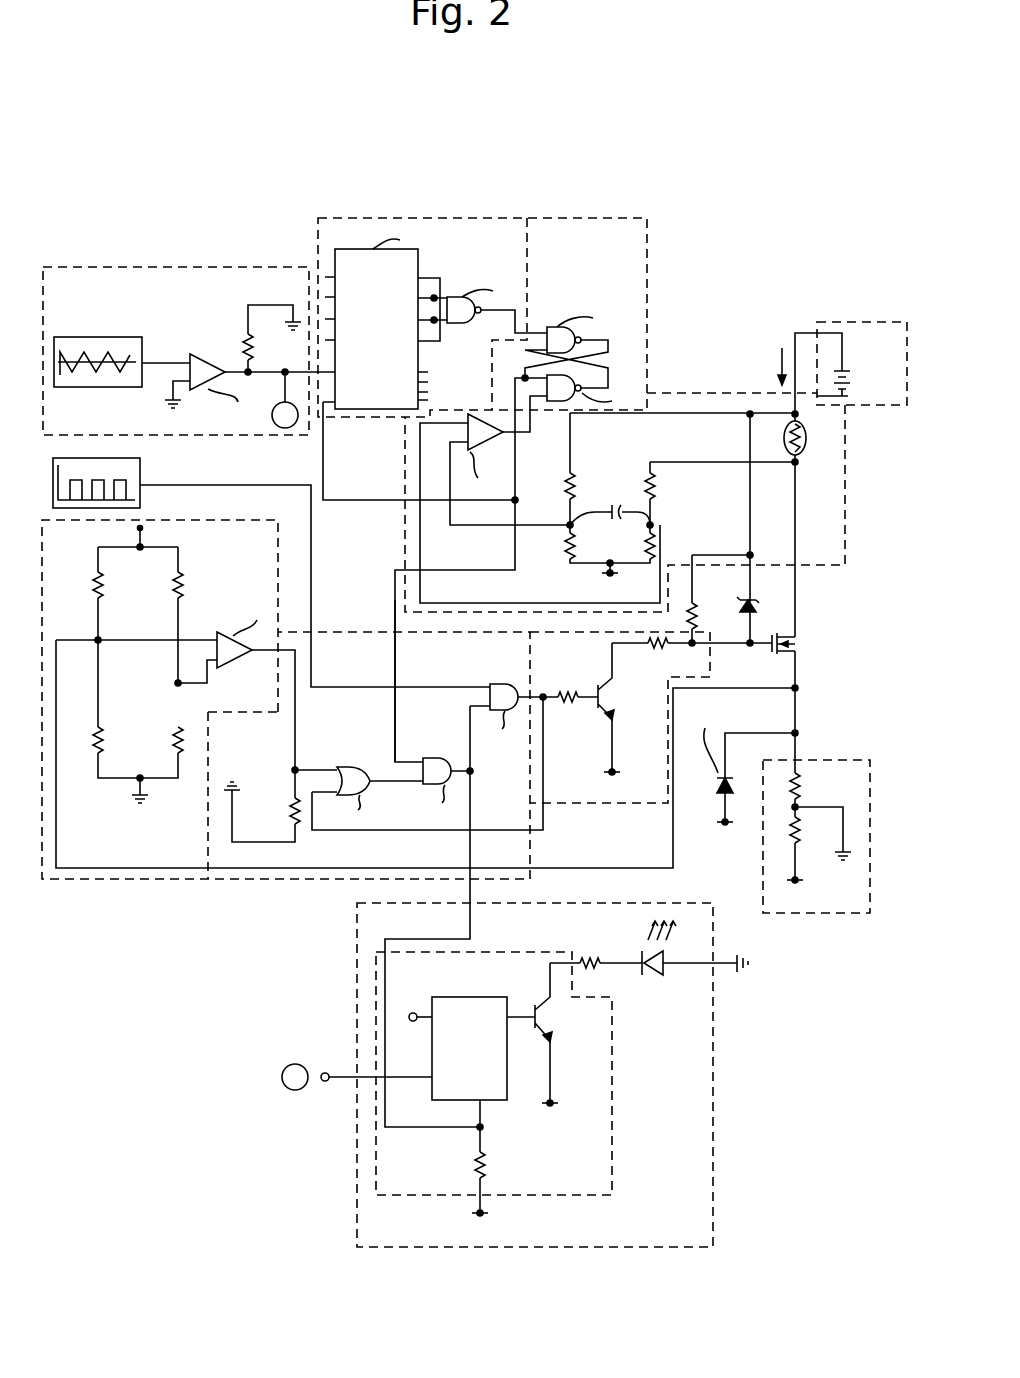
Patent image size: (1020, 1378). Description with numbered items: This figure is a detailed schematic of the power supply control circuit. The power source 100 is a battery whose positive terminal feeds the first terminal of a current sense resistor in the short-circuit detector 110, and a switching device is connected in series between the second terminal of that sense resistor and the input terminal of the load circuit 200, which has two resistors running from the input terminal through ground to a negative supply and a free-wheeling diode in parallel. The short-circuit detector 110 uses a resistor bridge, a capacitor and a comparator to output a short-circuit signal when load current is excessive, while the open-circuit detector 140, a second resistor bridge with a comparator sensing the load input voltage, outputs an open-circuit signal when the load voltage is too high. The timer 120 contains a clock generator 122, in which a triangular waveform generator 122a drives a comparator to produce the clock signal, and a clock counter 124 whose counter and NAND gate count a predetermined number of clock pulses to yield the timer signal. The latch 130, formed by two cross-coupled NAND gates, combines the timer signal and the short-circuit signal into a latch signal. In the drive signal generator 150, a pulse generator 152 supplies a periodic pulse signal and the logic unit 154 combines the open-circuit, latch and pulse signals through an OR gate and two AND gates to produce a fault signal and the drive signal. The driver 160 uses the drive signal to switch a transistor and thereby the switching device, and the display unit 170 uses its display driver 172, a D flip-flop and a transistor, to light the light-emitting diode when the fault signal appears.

The power source 100 is at (827, 322).
The short-circuit detector 110 is at (845, 505).
The timer 120 is at (314, 129).
The clock generator 122 is at (158, 267).
The triangular waveform generator 122a is at (92, 337).
The clock counter 124 is at (410, 218).
The latch 130 is at (557, 218).
The open-circuit detector 140 is at (73, 880).
The drive signal generator 150 is at (263, 895).
The pulse generator 152 is at (140, 460).
The logic unit 154 is at (348, 630).
The driver 160 is at (633, 806).
The display unit 170 is at (713, 1168).
The display driver 172 is at (612, 1175).
The load circuit 200 is at (838, 760).